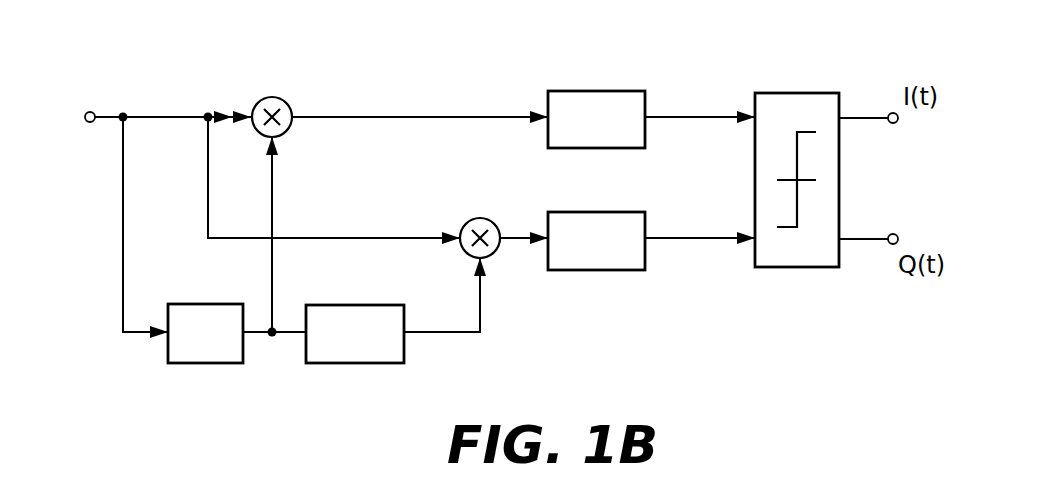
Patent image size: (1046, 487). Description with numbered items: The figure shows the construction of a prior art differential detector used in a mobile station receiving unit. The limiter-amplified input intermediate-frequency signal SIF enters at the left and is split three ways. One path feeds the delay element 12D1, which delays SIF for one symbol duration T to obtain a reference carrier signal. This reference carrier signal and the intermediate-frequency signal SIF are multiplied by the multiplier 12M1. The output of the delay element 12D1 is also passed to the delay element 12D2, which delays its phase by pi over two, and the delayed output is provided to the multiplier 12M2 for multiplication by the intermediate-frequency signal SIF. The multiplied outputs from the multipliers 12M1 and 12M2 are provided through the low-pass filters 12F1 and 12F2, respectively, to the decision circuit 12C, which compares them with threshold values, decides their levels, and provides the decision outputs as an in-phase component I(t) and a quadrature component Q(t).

The multiplier 12M1 is at (284, 97).
The multiplier 12M2 is at (480, 218).
The low-pass filter 12F1 is at (606, 148).
The low-pass filter 12F2 is at (645, 253).
The decision circuit 12C is at (790, 93).
The delay element 12D1 is at (210, 304).
The delay element 12D2 is at (364, 305).
The intermediate-frequency signal SIF is at (91, 94).